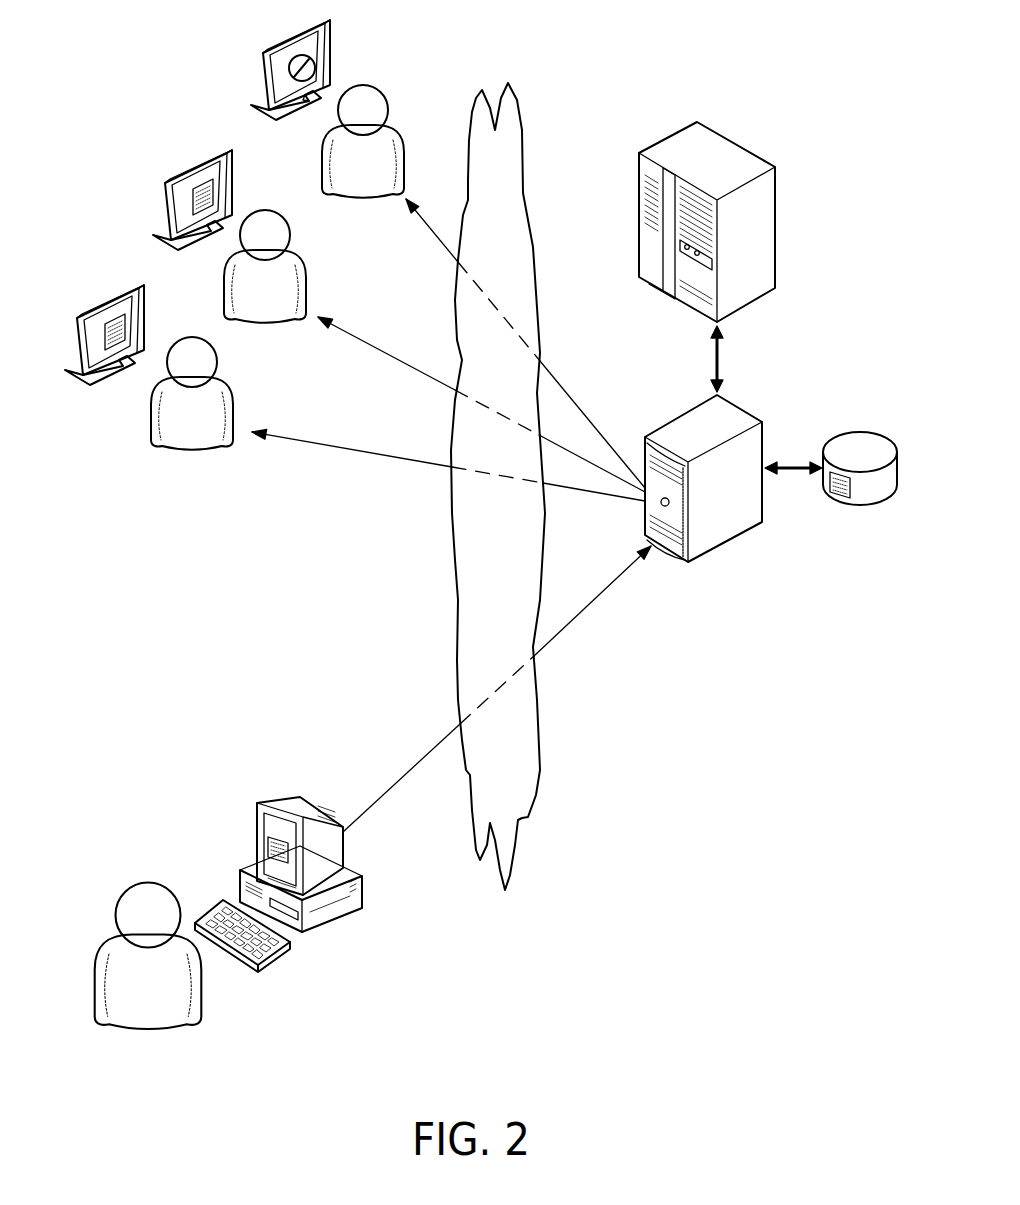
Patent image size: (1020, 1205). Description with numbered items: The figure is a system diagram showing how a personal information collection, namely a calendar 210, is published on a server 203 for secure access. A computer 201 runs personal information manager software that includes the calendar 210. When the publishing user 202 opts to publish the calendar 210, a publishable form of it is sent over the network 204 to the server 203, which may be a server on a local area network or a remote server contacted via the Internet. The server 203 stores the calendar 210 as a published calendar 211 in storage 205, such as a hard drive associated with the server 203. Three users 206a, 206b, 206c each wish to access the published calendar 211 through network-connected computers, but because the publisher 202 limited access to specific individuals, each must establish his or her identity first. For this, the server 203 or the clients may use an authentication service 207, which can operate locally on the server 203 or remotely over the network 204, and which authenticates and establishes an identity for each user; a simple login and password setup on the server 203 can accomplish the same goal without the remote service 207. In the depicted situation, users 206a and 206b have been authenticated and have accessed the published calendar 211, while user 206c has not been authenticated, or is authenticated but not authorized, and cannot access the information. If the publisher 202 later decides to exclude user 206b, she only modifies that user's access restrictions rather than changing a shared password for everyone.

The computer 201 is at (318, 928).
The publishing user 202 is at (195, 1022).
The server 203 is at (725, 540).
The network 204 is at (528, 820).
The storage 205 is at (862, 505).
The user 206a is at (188, 448).
The user 206b is at (262, 318).
The user 206c is at (352, 195).
The authentication service 207 is at (750, 302).
The calendar 210 is at (276, 850).
The published calendar 211 is at (832, 502).